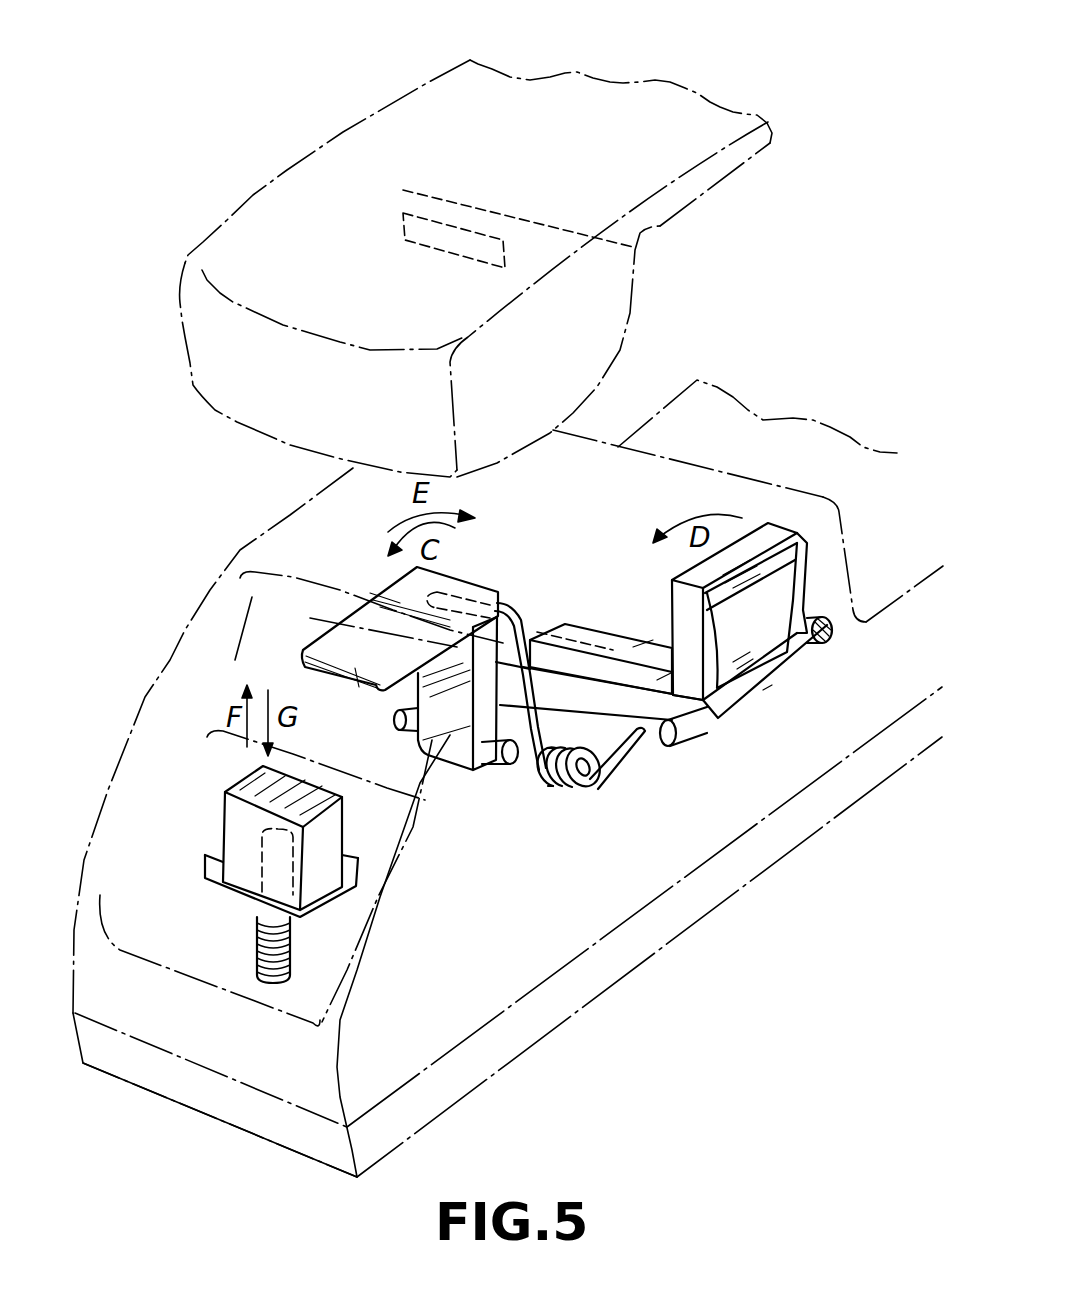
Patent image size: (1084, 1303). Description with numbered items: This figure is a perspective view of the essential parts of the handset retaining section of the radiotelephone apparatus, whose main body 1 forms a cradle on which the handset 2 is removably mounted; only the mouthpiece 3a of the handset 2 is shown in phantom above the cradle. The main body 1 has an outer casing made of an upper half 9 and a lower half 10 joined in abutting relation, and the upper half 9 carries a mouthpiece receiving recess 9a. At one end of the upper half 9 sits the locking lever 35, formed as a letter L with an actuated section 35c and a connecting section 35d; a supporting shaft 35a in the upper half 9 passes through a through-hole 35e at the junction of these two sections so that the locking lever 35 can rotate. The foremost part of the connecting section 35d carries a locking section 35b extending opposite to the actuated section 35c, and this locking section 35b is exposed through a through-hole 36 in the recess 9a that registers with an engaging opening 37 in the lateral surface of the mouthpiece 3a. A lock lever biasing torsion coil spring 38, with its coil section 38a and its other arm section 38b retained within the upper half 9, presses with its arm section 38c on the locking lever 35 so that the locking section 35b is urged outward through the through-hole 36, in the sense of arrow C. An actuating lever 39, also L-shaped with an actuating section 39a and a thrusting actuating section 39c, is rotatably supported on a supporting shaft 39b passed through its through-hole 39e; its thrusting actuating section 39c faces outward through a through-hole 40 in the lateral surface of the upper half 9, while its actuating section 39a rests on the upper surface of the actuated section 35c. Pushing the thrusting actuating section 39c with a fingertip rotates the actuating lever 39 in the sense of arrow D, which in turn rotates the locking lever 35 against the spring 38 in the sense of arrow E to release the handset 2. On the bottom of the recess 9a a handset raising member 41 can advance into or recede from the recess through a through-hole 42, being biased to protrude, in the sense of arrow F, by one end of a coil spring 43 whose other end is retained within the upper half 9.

The main body 1 is at (846, 440).
The handset 2 is at (668, 229).
The mouthpiece 3a is at (617, 357).
The upper half 9 is at (410, 1100).
The mouthpiece receiving recess 9a is at (293, 1013).
The lower half 10 is at (483, 1070).
The locking lever 35 is at (458, 578).
The supporting shaft 35a is at (517, 775).
The locking section 35b is at (330, 628).
The actuated section 35c is at (567, 687).
The connecting section 35d is at (447, 747).
The through-hole 35e is at (483, 775).
The through-hole 36 is at (358, 688).
The engaging opening 37 is at (503, 237).
The lock lever biasing torsion coil spring 38 is at (547, 778).
The coil section 38a is at (618, 780).
The other arm section 38b is at (627, 748).
The arm section 38c is at (516, 612).
The actuating lever 39 is at (767, 693).
The actuating section 39a is at (617, 633).
The supporting shaft 39b is at (692, 728).
The thrusting actuating section 39c is at (788, 638).
The through-hole 39e is at (728, 720).
The through-hole 40 is at (813, 590).
The handset raising member 41 is at (225, 816).
The through-hole 42 is at (240, 860).
The coil spring 43 is at (257, 940).